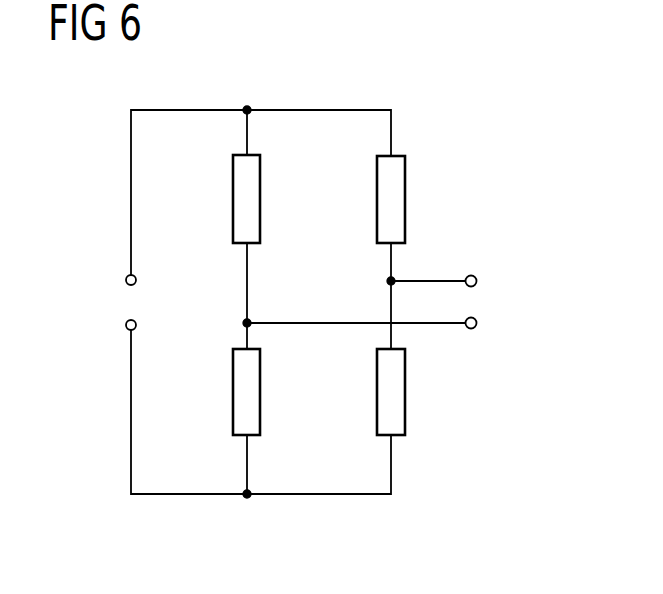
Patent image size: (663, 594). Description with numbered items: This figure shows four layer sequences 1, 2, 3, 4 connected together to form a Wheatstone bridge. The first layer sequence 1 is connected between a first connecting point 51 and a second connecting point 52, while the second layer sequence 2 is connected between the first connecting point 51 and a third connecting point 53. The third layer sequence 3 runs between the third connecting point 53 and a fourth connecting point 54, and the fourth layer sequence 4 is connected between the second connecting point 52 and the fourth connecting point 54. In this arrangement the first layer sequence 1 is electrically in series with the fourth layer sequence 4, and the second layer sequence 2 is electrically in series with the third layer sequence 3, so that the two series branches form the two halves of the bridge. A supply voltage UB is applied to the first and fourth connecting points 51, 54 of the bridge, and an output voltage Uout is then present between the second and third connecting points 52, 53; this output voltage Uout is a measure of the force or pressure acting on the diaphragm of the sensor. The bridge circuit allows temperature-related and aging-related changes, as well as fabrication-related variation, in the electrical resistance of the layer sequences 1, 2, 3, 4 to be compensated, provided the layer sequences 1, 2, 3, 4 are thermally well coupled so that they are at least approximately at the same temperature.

The first layer sequence 1 is at (233, 197).
The second layer sequence 2 is at (405, 197).
The third layer sequence 3 is at (405, 389).
The fourth layer sequence 4 is at (233, 389).
The first connecting point 51 is at (247, 106).
The second connecting point 52 is at (243, 323).
The third connecting point 53 is at (387, 281).
The fourth connecting point 54 is at (247, 499).
The supply voltage UB is at (130, 300).
The output voltage Uout is at (474, 302).